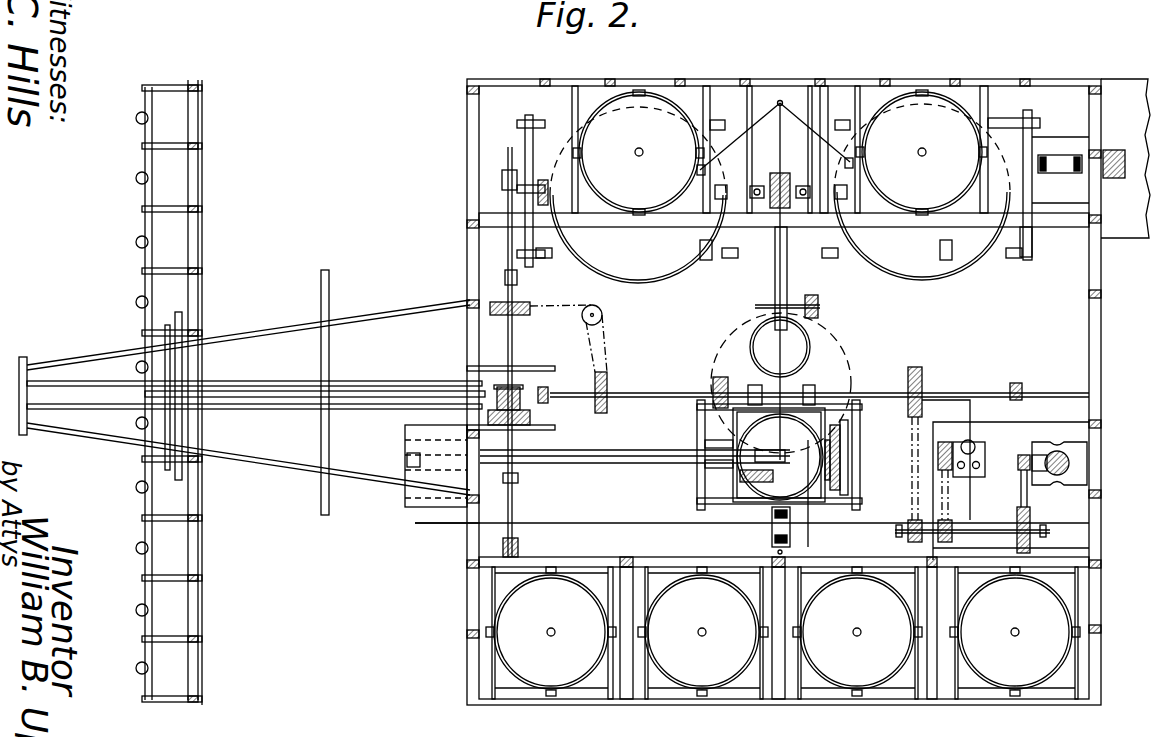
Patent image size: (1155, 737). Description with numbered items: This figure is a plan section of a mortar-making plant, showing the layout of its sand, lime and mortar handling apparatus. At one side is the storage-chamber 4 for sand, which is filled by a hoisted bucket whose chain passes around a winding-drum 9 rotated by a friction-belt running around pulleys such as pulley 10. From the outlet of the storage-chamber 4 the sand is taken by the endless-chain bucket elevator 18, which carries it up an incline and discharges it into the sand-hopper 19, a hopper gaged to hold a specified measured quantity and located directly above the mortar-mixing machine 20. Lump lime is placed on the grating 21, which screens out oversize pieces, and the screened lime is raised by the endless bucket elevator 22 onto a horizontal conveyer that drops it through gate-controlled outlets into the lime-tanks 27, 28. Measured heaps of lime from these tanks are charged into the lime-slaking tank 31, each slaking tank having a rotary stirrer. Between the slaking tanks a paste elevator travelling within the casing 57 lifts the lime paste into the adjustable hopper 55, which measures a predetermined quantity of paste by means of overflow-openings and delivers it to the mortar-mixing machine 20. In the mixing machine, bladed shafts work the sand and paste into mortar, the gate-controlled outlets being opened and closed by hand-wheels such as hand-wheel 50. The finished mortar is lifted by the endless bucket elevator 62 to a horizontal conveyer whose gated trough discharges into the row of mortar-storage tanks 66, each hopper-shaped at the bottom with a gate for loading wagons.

The storage-chamber 4 is at (252, 392).
The winding-drum 9 is at (502, 397).
The pulley 10 is at (535, 418).
The endless-chain bucket elevator 18 is at (635, 456).
The sand-hopper 19 is at (780, 438).
The mortar-mixing machine 20 is at (779, 455).
The grating 21 is at (1124, 138).
The endless bucket elevator 22 is at (1060, 175).
The lime-tank 27 is at (921, 152).
The lime-tank 28 is at (638, 152).
The lime-slaking tank 31 is at (779, 193).
The hand-wheel 50 is at (846, 428).
The adjustable hopper 55 is at (780, 347).
The casing 57 is at (790, 251).
The endless bucket elevator 62 is at (770, 535).
The mortar-storage tank 66 is at (783, 631).